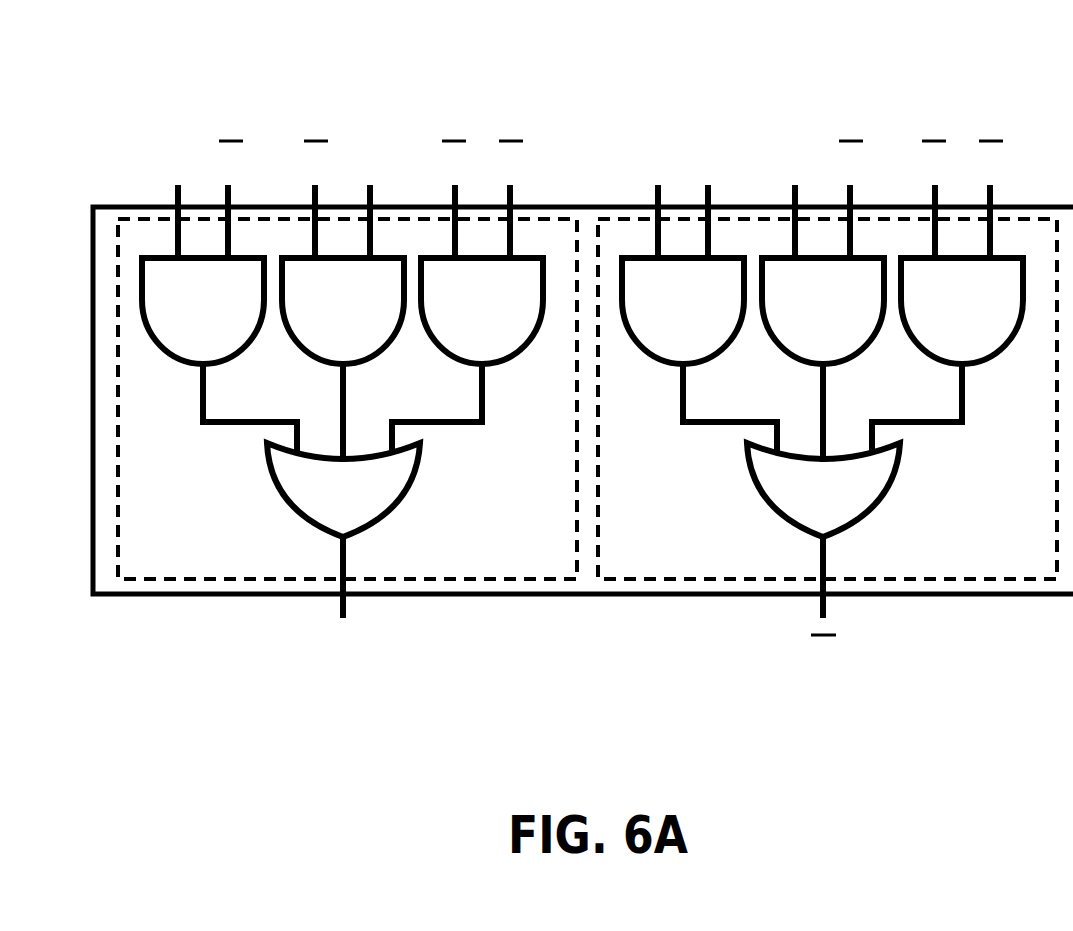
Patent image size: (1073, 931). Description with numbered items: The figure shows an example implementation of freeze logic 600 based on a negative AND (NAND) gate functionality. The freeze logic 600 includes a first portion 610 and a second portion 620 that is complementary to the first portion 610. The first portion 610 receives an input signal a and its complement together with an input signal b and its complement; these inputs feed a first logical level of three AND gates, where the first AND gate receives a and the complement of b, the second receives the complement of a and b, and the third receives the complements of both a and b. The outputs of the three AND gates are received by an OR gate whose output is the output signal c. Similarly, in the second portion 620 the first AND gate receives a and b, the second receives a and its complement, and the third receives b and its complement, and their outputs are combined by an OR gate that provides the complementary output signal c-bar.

The freeze logic 600 is at (1055, 207).
The first portion 610 is at (239, 581).
The second portion 620 is at (753, 580).